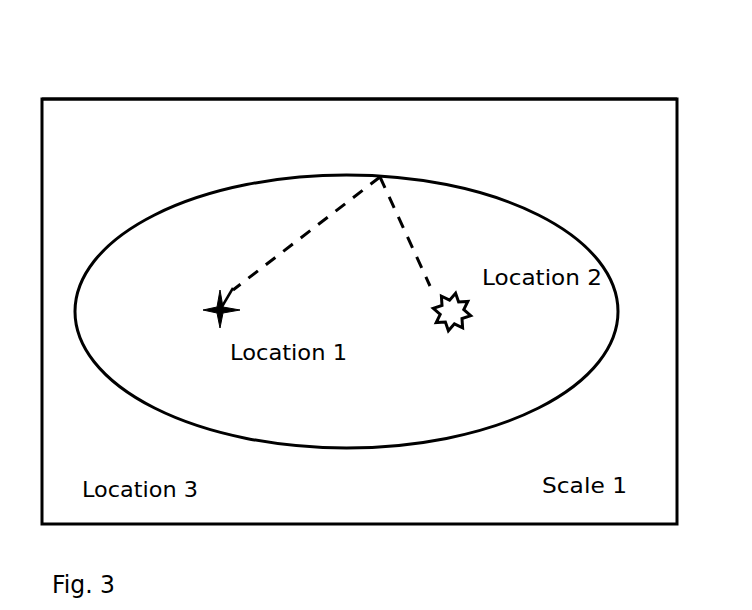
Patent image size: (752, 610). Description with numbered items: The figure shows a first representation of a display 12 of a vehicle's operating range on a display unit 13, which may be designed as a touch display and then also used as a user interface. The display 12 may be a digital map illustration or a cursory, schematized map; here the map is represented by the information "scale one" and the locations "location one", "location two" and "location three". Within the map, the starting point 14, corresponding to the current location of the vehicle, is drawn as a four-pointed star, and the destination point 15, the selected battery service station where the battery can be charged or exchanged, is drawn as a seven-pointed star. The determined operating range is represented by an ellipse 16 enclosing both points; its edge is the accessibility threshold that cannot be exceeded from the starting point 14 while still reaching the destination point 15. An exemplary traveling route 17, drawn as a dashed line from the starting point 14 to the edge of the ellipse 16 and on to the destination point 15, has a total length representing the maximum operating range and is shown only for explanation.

The display 12 is at (211, 89).
The display unit 13 is at (547, 99).
The starting point 14 is at (206, 312).
The destination point 15 is at (452, 310).
The ellipse 16 is at (541, 215).
The traveling route 17 is at (283, 247).